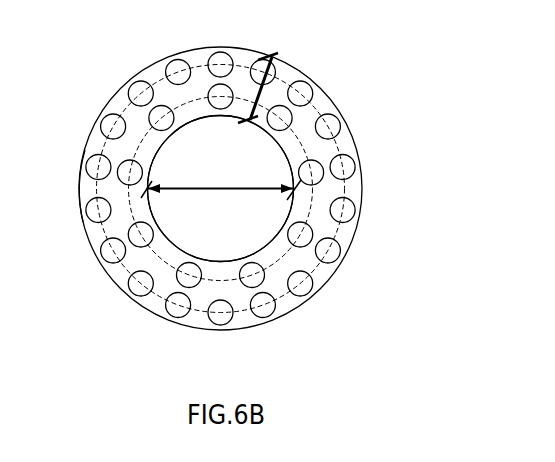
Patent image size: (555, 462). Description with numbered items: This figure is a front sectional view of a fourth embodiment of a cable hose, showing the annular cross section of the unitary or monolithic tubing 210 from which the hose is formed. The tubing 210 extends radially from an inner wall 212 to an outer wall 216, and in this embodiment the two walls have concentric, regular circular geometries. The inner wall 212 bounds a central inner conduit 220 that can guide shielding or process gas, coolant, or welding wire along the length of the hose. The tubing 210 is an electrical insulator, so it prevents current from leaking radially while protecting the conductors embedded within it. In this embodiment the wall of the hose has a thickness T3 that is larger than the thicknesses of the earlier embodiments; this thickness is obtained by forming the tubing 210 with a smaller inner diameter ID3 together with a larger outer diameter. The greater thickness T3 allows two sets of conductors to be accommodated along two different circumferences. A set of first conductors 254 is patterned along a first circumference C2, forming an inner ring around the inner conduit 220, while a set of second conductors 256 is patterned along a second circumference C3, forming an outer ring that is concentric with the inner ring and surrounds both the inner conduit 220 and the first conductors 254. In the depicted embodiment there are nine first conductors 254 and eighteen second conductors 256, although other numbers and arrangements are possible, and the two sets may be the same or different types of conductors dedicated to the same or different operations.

The tubing 210 is at (113, 283).
The outer wall 216 is at (86, 222).
The inner wall 212 is at (186, 253).
The inner conduit 220 is at (202, 130).
The second circumference C3 is at (112, 130).
The first circumference C2 is at (158, 122).
The second conductors 256 is at (356, 202).
The first conductors 254 is at (325, 160).
The thickness T3 is at (253, 93).
The inner diameter ID3 is at (262, 188).